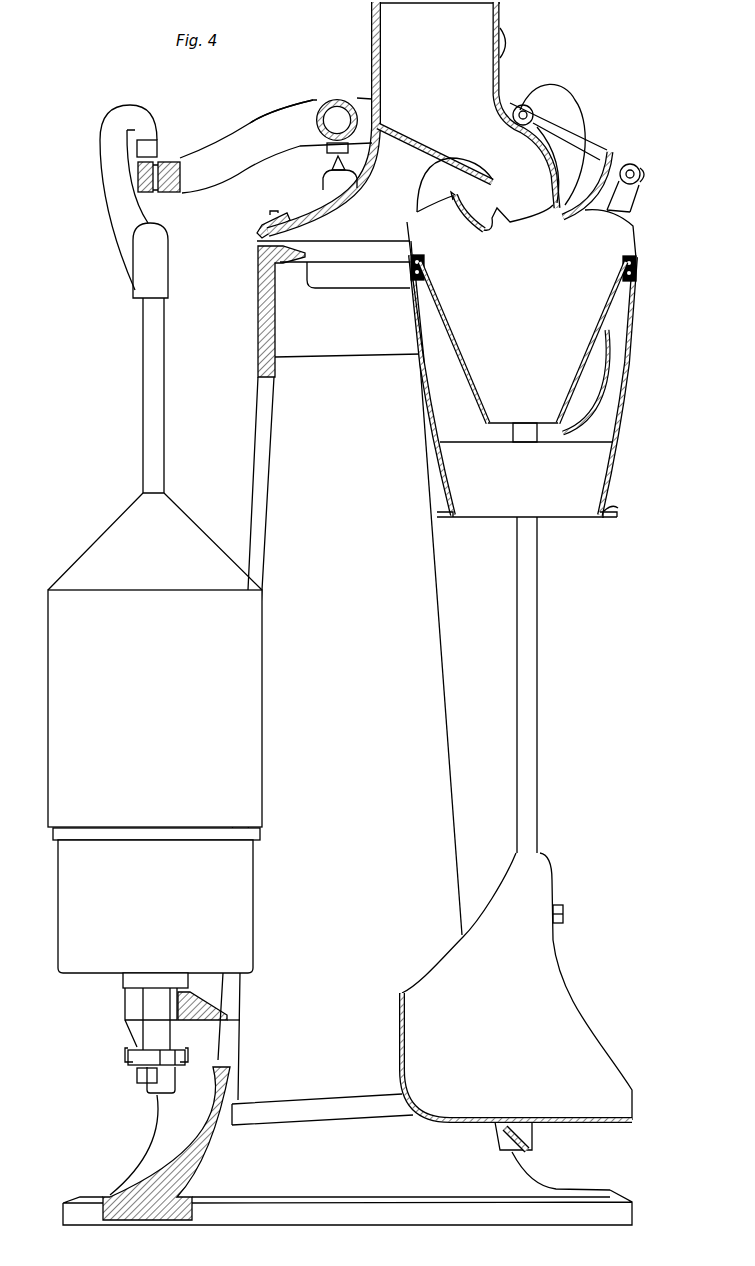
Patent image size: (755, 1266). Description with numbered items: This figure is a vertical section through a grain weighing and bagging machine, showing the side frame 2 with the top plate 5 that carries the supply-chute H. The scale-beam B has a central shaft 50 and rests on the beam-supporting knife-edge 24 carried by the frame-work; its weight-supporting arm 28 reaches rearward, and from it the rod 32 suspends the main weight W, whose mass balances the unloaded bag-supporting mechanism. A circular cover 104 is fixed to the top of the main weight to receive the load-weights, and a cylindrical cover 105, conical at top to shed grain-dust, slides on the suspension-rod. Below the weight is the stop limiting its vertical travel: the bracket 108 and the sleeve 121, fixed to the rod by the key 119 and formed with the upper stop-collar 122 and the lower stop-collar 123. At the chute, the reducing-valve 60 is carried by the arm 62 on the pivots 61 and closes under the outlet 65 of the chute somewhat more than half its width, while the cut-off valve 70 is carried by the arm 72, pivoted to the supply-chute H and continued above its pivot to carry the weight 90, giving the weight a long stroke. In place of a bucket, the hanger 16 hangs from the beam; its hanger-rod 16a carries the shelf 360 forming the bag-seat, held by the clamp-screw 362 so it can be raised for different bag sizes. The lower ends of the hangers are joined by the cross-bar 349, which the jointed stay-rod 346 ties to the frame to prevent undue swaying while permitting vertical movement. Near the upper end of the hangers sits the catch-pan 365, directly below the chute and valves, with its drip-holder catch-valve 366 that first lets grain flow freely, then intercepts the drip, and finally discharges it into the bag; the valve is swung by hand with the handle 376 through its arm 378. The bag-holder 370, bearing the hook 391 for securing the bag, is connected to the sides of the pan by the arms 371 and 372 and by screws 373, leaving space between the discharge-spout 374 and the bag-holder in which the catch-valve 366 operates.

The supply-chute H is at (482, 28).
The weight 90 is at (507, 47).
The arm 72 is at (507, 90).
The pivots 61 is at (528, 110).
The hanger 16 is at (560, 110).
The arm 62 is at (580, 140).
The reducing-valve 60 is at (587, 182).
The handle 376 is at (634, 183).
The arm 378 is at (621, 201).
The cut-off valve 70 is at (477, 211).
The outlet 65 is at (527, 208).
The scale-beam B is at (281, 104).
The weight-supporting arm 28 is at (220, 147).
The central shaft 50 is at (321, 100).
The beam-supporting knife-edge 24 is at (333, 160).
The top plate 5 is at (259, 237).
The side frame 2 is at (438, 751).
The rod 32 is at (152, 392).
The cylindrical cover 105 is at (60, 687).
The circular cover 104 is at (53, 837).
The main weight W is at (70, 889).
The upper stop-collar 122 is at (133, 985).
The bracket 108 is at (133, 1008).
The sleeve 121 is at (150, 1028).
The lower stop-collar 123 is at (133, 1058).
The key 119 is at (143, 1080).
The screws 373 is at (410, 272).
The arm 372 is at (420, 320).
The catch-pan 365 is at (600, 292).
The catch-valve 366 is at (598, 373).
The arm 371 is at (623, 394).
The discharge-spout 374 is at (508, 410).
The bag-holder 370 is at (593, 460).
The hook 391 is at (612, 509).
The hanger-rod 16a is at (532, 672).
The shelf 360 is at (592, 1124).
The clamp-screw 362 is at (562, 908).
The cross-bar 349 is at (500, 1138).
The stay-rod 346 is at (328, 1122).